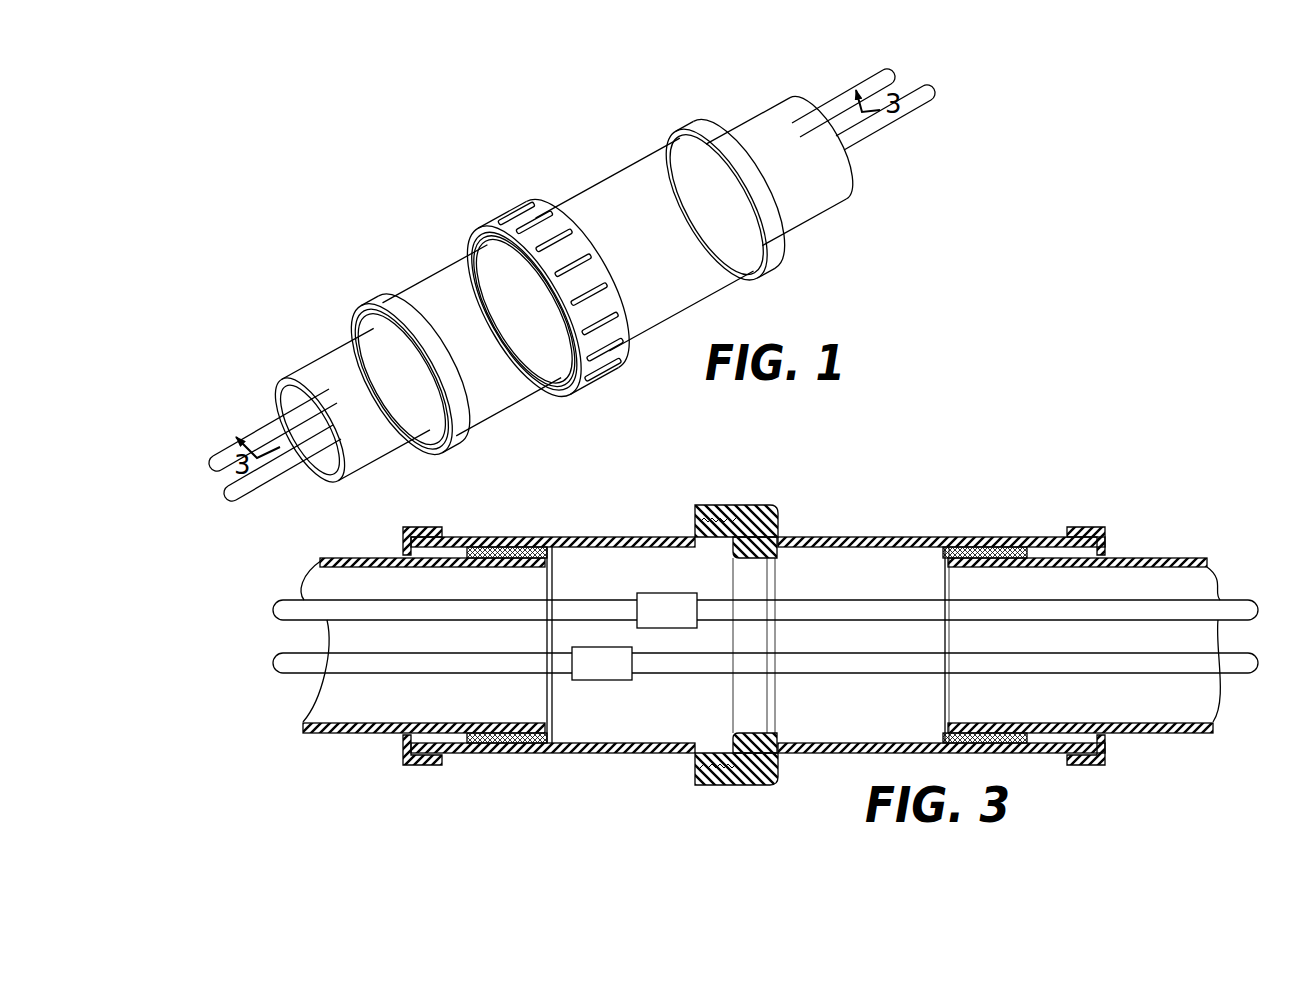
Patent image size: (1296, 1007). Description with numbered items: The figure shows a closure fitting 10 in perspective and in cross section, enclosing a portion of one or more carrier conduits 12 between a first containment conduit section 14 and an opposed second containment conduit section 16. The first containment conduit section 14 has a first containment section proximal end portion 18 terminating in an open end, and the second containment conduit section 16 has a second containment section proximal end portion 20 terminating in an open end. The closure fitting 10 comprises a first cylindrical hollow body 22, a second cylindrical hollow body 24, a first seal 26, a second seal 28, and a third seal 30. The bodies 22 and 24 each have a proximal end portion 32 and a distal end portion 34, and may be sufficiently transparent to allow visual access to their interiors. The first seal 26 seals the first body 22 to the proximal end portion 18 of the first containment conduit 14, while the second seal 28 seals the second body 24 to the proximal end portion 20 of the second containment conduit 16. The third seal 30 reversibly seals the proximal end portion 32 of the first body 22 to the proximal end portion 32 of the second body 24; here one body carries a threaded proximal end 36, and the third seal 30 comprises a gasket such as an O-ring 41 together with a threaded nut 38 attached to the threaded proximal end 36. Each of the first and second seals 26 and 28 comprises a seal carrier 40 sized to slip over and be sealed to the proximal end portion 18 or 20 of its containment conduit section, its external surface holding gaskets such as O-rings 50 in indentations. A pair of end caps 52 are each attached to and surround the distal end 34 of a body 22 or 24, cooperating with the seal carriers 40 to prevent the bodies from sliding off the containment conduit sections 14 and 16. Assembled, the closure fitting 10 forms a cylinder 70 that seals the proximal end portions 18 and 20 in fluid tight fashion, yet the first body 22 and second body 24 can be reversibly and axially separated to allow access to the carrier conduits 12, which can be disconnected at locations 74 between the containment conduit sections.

In FIG. 1, the closure fitting 10 is at (384, 187).
In FIG. 3, the closure fitting 10 is at (956, 398).
In FIG. 1, the carrier conduits 12 is at (218, 458).
In FIG. 3, the carrier conduits 12 is at (1223, 607).
In FIG. 1, the first containment conduit section 14 is at (327, 372).
In FIG. 3, the first containment conduit section 14 is at (355, 555).
In FIG. 1, the second containment conduit section 16 is at (823, 200).
In FIG. 3, the second containment conduit section 16 is at (1173, 555).
In FIG. 3, the first containment section proximal end portion 18 is at (503, 572).
In FIG. 3, the second containment section proximal end portion 20 is at (968, 560).
In FIG. 1, the first cylindrical hollow body 22 is at (447, 292).
In FIG. 3, the first cylindrical hollow body 22 is at (597, 528).
In FIG. 1, the second cylindrical hollow body 24 is at (600, 190).
In FIG. 3, the second cylindrical hollow body 24 is at (871, 530).
In FIG. 3, the first seal 26 is at (505, 547).
In FIG. 3, the second seal 28 is at (990, 545).
In FIG. 3, the third seal 30 is at (760, 515).
In FIG. 3, the proximal end portion 32 is at (740, 504).
In FIG. 3, the distal end portion 34 is at (418, 528).
In FIG. 3, the threaded proximal end 36 is at (712, 770).
In FIG. 1, the threaded nut 38 is at (517, 216).
In FIG. 3, the threaded nut 38 is at (748, 790).
In FIG. 3, the seal carrier 40 is at (465, 536).
In FIG. 3, the O-ring 41 is at (745, 742).
In FIG. 3, the O-rings 50 is at (530, 547).
In FIG. 1, the end caps 52 is at (380, 305).
In FIG. 3, the end caps 52 is at (402, 750).
In FIG. 3, the cylinder 70 is at (681, 530).
In FIG. 3, the locations 74 is at (660, 593).